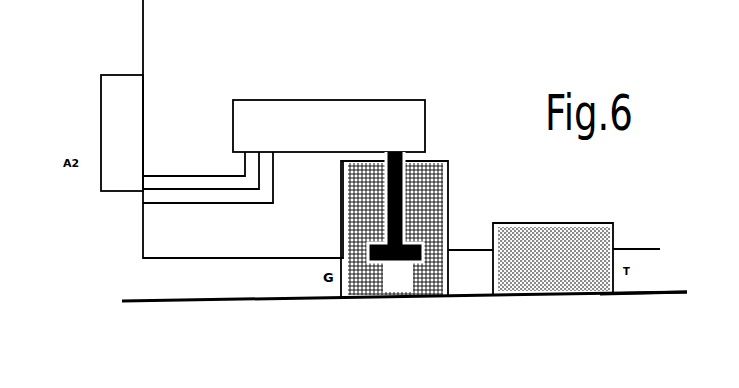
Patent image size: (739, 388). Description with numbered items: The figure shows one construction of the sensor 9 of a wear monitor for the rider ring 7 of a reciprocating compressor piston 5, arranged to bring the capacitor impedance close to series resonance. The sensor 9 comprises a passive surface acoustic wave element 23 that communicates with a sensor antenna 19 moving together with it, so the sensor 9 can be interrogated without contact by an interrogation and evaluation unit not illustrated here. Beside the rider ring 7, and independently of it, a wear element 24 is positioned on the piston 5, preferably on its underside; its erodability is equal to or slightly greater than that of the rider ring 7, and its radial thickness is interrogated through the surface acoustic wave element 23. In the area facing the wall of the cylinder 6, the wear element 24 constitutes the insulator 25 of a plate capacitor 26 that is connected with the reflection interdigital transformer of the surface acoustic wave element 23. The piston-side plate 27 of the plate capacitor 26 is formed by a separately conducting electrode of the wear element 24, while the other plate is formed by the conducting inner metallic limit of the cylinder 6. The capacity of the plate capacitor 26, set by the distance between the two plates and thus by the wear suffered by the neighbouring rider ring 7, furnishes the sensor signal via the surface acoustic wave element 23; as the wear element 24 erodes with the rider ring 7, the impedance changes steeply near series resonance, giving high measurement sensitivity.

The sensor antenna 19 is at (107, 110).
The surface acoustic wave element 23 is at (304, 139).
The sensor 9 is at (363, 96).
The plate 27 is at (426, 255).
The plate capacitor 26 is at (395, 222).
The wear element 24 is at (380, 283).
The insulator 25 is at (430, 283).
The rider ring 7 is at (590, 285).
The piston 5 is at (633, 247).
The cylinder 6 is at (644, 294).